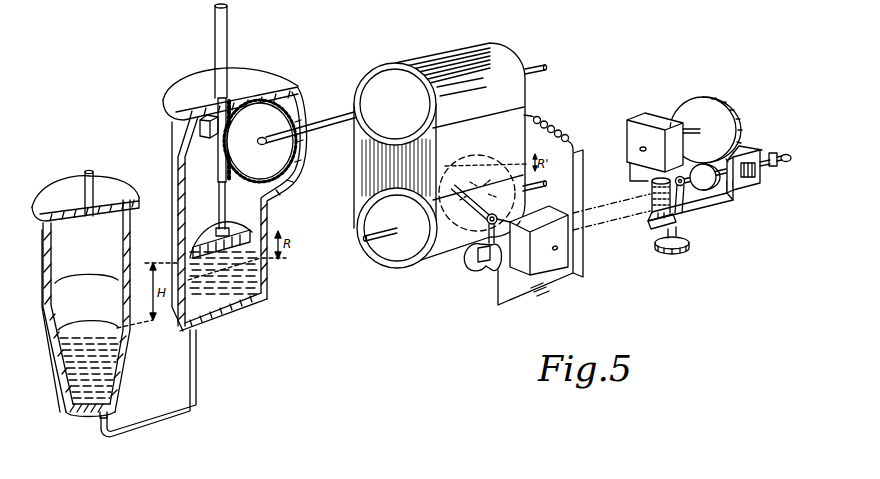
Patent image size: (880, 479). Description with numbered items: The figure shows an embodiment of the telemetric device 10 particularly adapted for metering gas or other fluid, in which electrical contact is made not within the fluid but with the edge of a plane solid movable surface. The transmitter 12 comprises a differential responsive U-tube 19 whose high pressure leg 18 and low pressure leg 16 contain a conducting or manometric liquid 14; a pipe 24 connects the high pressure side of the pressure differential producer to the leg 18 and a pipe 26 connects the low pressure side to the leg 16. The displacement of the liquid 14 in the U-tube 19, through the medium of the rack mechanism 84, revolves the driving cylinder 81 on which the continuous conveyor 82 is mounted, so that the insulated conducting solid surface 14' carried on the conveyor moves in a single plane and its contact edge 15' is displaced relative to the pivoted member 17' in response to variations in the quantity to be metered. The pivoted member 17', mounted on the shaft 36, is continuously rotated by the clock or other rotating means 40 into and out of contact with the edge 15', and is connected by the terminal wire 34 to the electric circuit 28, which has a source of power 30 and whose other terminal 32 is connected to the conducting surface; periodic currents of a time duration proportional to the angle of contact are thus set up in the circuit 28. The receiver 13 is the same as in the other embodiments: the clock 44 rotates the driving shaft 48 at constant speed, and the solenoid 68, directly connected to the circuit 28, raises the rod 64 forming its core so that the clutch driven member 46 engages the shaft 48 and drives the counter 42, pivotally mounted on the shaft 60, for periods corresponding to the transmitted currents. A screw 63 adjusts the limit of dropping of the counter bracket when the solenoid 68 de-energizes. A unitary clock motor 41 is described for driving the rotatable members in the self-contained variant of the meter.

The telemetric device 10 is at (363, 44).
The transmitter 12 is at (350, 226).
The receiver 13 is at (700, 213).
The conducting liquid 14 is at (235, 197).
The insulated conducting solid surface 14' is at (545, 100).
The contact edge 15' is at (477, 193).
The low pressure leg 16 is at (233, 311).
The pivoted member 17' is at (472, 214).
The high pressure leg 18 is at (74, 416).
The U-tube 19 is at (147, 432).
The pipe 24 is at (94, 181).
The pipe 26 is at (228, 54).
The electric circuit 28 is at (584, 268).
The source of power 30 is at (549, 294).
The terminal 32 is at (562, 134).
The terminal wire 34 is at (498, 297).
The shaft 36 is at (517, 213).
The clock 40 is at (549, 266).
The clock motor 41 is at (118, 377).
The counter 42 is at (751, 183).
The clock 44 is at (634, 130).
The clutch driven member 46 is at (712, 186).
The driving shaft 48 is at (722, 104).
The shaft 60 is at (787, 162).
The screw 63 is at (661, 252).
The rod 64 is at (650, 225).
The solenoid 68 is at (652, 200).
The driving cylinder 81 is at (373, 89).
The continuous conveyor 82 is at (470, 53).
The rack mechanism 84 is at (220, 161).